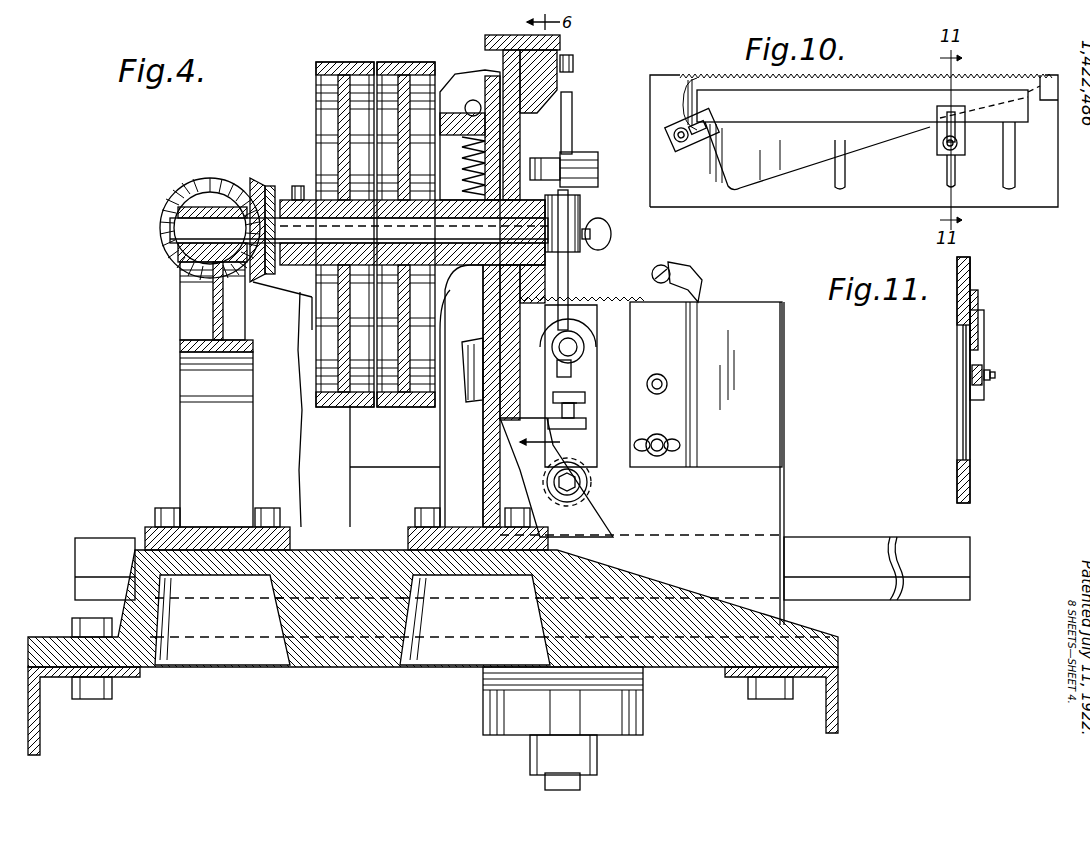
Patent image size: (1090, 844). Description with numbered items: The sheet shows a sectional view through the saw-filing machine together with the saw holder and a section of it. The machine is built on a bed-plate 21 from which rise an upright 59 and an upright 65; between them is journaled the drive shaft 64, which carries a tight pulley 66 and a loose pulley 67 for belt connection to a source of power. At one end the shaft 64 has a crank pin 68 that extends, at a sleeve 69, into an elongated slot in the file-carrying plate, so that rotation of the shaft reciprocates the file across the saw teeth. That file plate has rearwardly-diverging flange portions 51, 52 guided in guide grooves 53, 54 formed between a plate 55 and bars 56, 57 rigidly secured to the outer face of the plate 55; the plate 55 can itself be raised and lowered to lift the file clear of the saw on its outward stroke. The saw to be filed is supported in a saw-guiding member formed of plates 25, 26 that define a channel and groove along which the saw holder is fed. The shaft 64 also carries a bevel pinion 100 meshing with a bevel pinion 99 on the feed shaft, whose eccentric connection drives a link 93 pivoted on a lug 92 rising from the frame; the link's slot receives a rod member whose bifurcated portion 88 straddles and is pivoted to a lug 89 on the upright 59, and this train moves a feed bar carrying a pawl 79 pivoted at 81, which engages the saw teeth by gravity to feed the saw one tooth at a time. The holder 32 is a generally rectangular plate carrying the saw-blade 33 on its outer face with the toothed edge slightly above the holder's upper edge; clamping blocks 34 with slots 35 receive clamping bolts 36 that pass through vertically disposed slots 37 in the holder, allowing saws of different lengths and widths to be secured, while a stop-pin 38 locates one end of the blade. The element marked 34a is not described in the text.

In FIG. 4, the bed-plate 21 is at (350, 668).
In FIG. 4, the plate 25 is at (778, 390).
In FIG. 4, the plate 26 is at (968, 554).
In FIG. 10, the holder 32 is at (1024, 204).
In FIG. 11, the holder 32 is at (956, 478).
In FIG. 4, the saw-blade 33 is at (308, 445).
In FIG. 10, the saw-blade 33 is at (786, 156).
In FIG. 11, the saw-blade 33 is at (974, 276).
In FIG. 10, the blocks 34 is at (930, 131).
In FIG. 10, the wedge 34a is at (803, 120).
In FIG. 11, the wedge 34a is at (981, 302).
In FIG. 10, the slots 35 is at (942, 114).
In FIG. 11, the slots 35 is at (984, 352).
In FIG. 10, the clamping bolts 36 is at (938, 142).
In FIG. 11, the clamping bolts 36 is at (998, 374).
In FIG. 10, the slots 37 is at (946, 173).
In FIG. 11, the slots 37 is at (974, 428).
In FIG. 10, the stop-pin 38 is at (680, 120).
In FIG. 4, the flange portion 51 is at (562, 92).
In FIG. 4, the flange portion 52 is at (574, 337).
In FIG. 4, the guide groove 53 is at (552, 84).
In FIG. 4, the guide groove 54 is at (572, 359).
In FIG. 4, the plate 55 is at (484, 62).
In FIG. 4, the bar 56 is at (548, 94).
In FIG. 4, the bar 57 is at (584, 389).
In FIG. 4, the upright 59 is at (428, 490).
In FIG. 4, the drive shaft 64 is at (300, 186).
In FIG. 4, the upright 65 is at (188, 394).
In FIG. 4, the tight pulley 66 is at (344, 62).
In FIG. 4, the loose pulley 67 is at (402, 62).
In FIG. 4, the crank pin 68 is at (574, 156).
In FIG. 4, the sleeve 69 is at (592, 194).
In FIG. 4, the pawl 79 is at (698, 280).
In FIG. 4, the pivot 81 is at (664, 264).
In FIG. 4, the bifurcated portion 88 is at (586, 427).
In FIG. 4, the lug 89 is at (576, 404).
In FIG. 4, the lug 92 is at (588, 520).
In FIG. 4, the link 93 is at (590, 448).
In FIG. 4, the bevel pinion 99 is at (194, 186).
In FIG. 4, the bevel pinion 100 is at (258, 180).